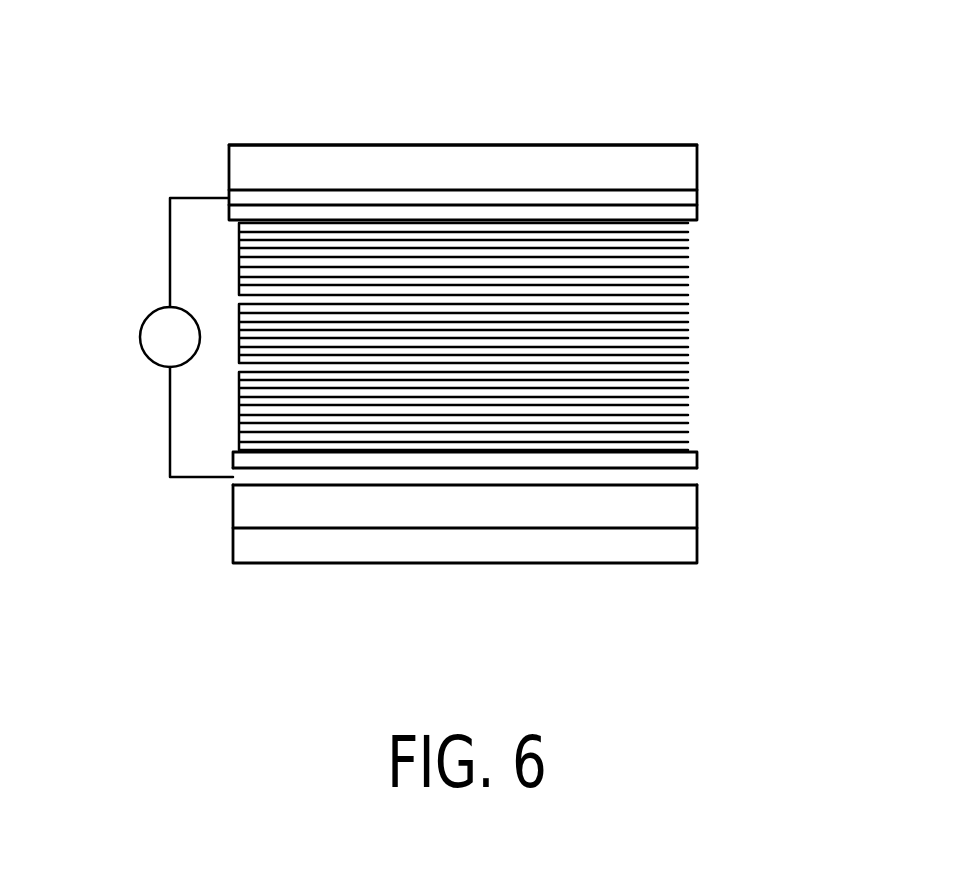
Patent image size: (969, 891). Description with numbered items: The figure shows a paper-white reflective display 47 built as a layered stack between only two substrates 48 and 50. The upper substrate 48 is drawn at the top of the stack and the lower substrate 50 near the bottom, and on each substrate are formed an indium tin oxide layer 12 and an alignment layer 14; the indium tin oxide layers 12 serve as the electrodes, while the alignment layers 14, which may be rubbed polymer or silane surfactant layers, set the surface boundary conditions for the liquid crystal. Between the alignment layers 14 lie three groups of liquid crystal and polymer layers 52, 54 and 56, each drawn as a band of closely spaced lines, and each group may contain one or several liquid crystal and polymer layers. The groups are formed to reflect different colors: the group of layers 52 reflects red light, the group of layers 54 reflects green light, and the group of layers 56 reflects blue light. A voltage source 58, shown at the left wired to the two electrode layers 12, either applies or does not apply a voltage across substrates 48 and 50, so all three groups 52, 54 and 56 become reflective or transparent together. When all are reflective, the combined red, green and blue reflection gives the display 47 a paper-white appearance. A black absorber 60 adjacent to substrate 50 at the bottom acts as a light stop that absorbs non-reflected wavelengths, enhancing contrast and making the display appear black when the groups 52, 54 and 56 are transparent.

The indium tin oxide layer 12 is at (238, 191).
The alignment layer 14 is at (697, 213).
The paper-white reflective display 47 is at (372, 155).
The substrate 48 is at (697, 167).
The substrate 50 is at (697, 500).
The group of liquid crystal and polymer layers 52 is at (692, 225).
The group of liquid crystal and polymer layers 54 is at (692, 303).
The group of liquid crystal and polymer layers 56 is at (692, 370).
The voltage source 58 is at (140, 325).
The black absorber 60 is at (697, 540).